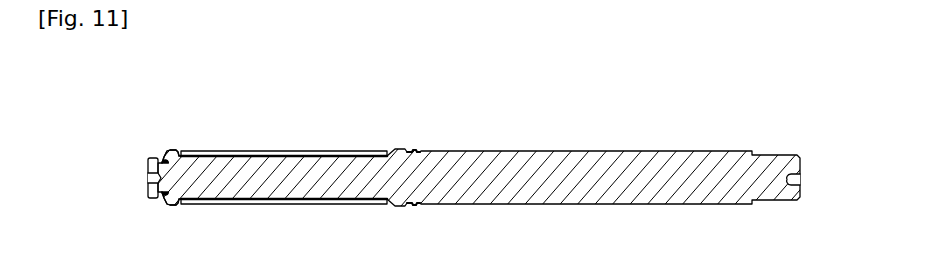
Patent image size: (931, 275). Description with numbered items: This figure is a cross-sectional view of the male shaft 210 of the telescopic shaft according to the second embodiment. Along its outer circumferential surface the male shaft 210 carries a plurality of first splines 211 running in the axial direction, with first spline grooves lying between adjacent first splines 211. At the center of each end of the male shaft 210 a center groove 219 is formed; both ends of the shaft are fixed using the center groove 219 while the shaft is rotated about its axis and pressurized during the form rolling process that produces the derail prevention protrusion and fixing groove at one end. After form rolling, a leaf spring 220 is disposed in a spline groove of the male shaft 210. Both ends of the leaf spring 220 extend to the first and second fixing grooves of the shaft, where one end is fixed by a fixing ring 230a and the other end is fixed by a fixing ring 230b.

The male shaft 210 is at (550, 133).
The first splines 211 is at (283, 151).
The center groove 219 is at (148, 182).
The leaf spring 220 is at (173, 148).
The fixing ring 230a is at (415, 150).
The fixing ring 230b is at (165, 201).